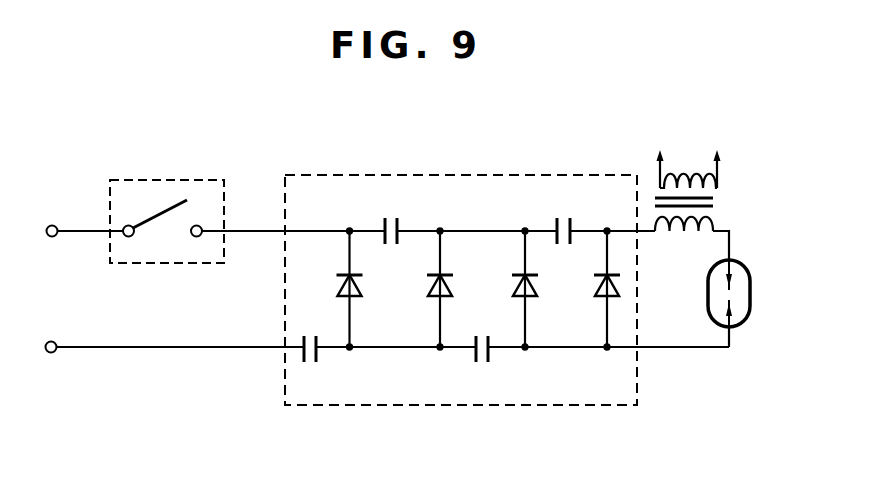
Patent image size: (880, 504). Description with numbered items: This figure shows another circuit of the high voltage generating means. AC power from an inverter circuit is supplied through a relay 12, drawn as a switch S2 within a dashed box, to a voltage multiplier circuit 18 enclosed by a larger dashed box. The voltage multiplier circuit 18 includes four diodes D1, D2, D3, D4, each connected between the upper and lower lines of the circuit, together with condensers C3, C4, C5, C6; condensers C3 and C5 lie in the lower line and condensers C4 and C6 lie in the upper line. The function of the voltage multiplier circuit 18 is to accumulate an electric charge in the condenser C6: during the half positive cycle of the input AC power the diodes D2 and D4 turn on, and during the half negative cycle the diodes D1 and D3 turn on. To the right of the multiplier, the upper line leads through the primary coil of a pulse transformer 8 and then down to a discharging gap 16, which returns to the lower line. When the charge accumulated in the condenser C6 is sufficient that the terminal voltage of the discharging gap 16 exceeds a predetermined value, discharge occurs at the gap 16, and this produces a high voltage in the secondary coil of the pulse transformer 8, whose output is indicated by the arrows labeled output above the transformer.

The relay 12 is at (187, 188).
The switch S2 is at (162, 175).
The voltage multiplier circuit 18 is at (461, 316).
The condenser C3 is at (310, 363).
The condenser C4 is at (394, 207).
The condenser C5 is at (483, 365).
The condenser C6 is at (565, 215).
The diode D1 is at (352, 298).
The diode D2 is at (448, 298).
The diode D3 is at (530, 298).
The diode D4 is at (585, 289).
The pulse transformer 8 is at (720, 200).
The discharging gap 16 is at (748, 273).